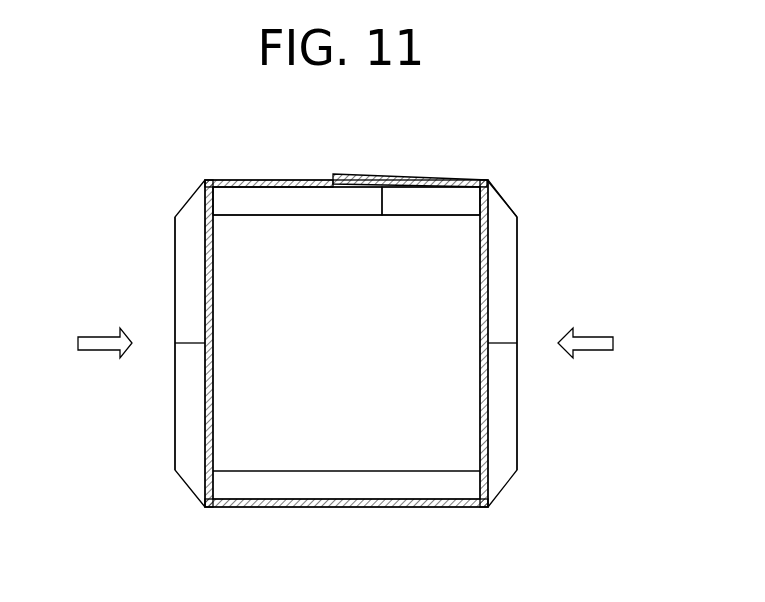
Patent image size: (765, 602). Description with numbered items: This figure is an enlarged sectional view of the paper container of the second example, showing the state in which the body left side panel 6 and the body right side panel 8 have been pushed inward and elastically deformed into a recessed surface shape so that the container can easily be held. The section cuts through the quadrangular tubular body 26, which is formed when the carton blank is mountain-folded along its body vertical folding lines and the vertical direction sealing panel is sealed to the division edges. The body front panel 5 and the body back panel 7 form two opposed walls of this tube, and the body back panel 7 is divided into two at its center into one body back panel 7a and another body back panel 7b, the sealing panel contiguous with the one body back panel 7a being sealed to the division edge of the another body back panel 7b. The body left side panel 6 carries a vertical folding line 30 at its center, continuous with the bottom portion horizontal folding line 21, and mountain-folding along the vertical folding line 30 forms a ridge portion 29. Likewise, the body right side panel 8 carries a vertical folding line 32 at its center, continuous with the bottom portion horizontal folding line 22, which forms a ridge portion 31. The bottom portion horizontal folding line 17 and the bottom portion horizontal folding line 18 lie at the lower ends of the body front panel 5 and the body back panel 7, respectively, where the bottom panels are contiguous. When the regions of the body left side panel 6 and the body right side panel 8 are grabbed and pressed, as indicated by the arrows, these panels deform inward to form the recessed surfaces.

The body front panel 5 is at (373, 490).
The body left side panel 6 is at (190, 270).
The body back panel 7 is at (272, 202).
The one body back panel 7a is at (300, 202).
The another body back panel 7b is at (432, 202).
The body right side panel 8 is at (503, 270).
The bottom portion horizontal folding line 17 is at (325, 470).
The bottom portion horizontal folding line 18 is at (325, 216).
The bottom portion horizontal folding line 21 is at (175, 233).
The bottom portion horizontal folding line 22 is at (518, 233).
The quadrangular tubular body 26 is at (514, 182).
The ridge portion 29 is at (197, 343).
The vertical folding line 30 is at (190, 343).
The ridge portion 31 is at (497, 343).
The vertical folding line 32 is at (503, 343).